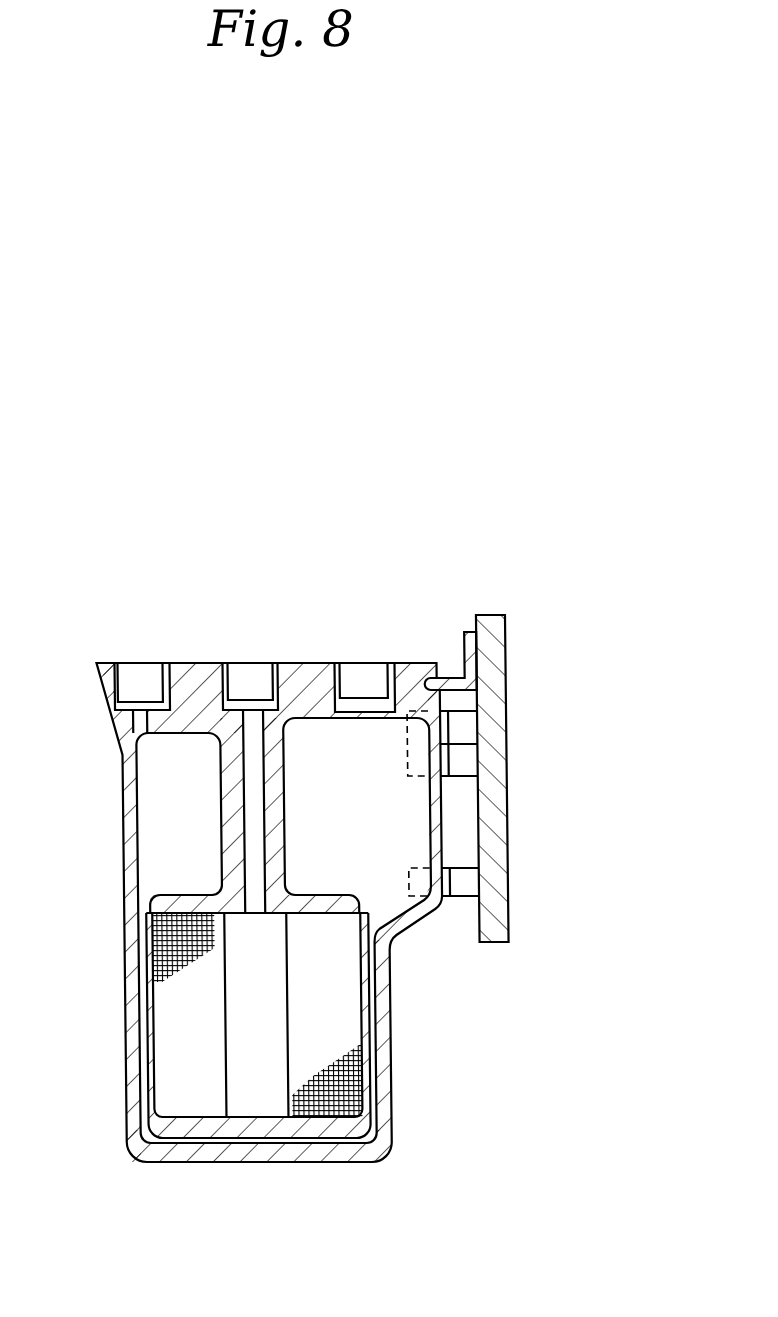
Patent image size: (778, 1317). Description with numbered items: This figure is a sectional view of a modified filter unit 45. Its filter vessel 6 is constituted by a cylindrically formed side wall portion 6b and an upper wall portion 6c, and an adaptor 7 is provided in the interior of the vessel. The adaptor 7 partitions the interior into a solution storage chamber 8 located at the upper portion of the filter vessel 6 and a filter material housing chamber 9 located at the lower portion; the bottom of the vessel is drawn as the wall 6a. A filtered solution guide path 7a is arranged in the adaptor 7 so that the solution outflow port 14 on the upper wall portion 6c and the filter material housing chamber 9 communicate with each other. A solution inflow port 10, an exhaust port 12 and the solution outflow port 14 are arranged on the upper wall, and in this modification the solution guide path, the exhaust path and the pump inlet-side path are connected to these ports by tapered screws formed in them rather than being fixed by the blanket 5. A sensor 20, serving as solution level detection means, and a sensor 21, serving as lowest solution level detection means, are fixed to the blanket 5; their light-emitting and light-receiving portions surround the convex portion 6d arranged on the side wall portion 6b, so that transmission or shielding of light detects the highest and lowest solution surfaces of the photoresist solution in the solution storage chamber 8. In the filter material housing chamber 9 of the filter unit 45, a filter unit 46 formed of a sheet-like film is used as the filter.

The blanket 5 is at (497, 653).
The filter vessel 6 is at (330, 890).
The casing bottom wall 6a is at (266, 1155).
The side wall portion 6b is at (134, 927).
The upper wall portion 6c is at (192, 673).
The convex portion 6d is at (440, 795).
The adaptor 7 is at (268, 858).
The filtered solution guide path 7a is at (257, 820).
The solution storage chamber 8 is at (150, 805).
The filter material housing chamber 9 is at (375, 1022).
The solution inflow port 10 is at (137, 676).
The exhaust port 12 is at (363, 672).
The solution outflow port 14 is at (252, 673).
The sensor 20 is at (467, 730).
The sensor 21 is at (467, 882).
The filter unit 45 is at (520, 702).
The filter unit 46 is at (177, 1057).